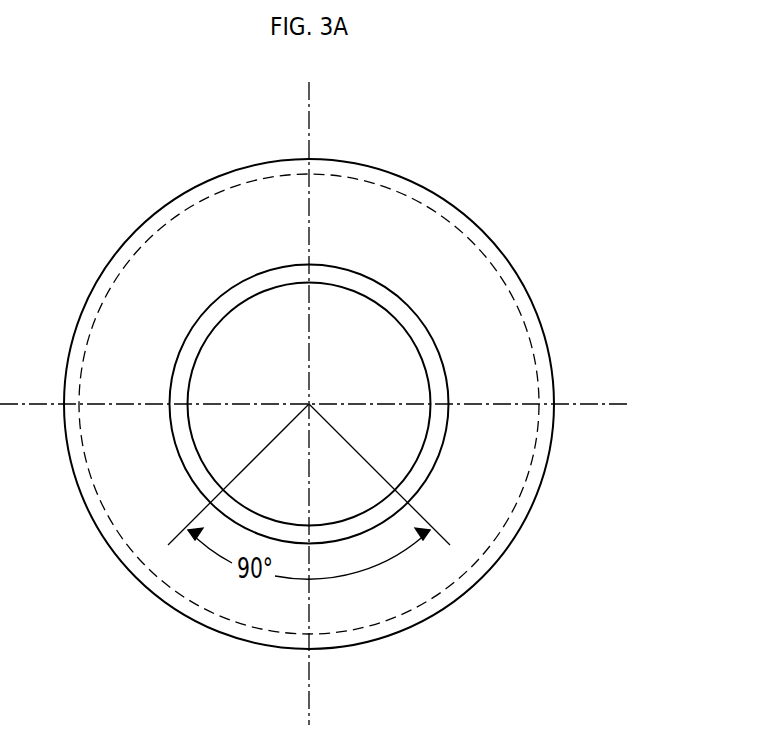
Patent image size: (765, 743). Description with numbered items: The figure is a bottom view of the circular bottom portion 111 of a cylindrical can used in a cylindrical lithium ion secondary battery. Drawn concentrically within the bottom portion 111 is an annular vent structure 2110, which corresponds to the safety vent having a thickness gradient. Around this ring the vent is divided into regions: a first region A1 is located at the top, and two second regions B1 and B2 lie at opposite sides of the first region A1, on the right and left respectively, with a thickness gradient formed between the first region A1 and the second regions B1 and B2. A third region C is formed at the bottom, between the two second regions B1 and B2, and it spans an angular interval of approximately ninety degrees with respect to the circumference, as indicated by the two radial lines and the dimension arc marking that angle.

The bottom portion 111 is at (540, 308).
The inner ring portion 2110 is at (377, 270).
The first region A1 is at (332, 248).
The second region B1 is at (465, 391).
The second region B2 is at (153, 389).
The third region C is at (325, 559).